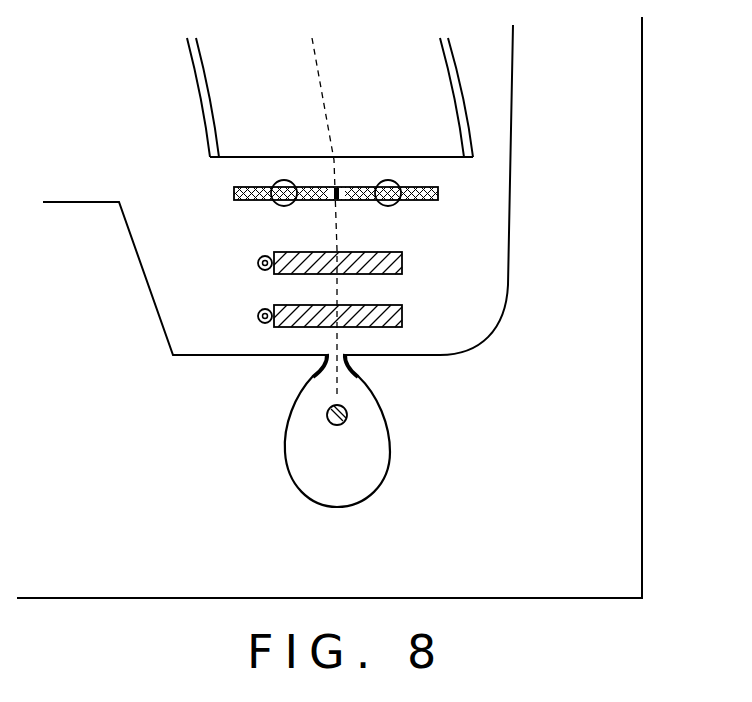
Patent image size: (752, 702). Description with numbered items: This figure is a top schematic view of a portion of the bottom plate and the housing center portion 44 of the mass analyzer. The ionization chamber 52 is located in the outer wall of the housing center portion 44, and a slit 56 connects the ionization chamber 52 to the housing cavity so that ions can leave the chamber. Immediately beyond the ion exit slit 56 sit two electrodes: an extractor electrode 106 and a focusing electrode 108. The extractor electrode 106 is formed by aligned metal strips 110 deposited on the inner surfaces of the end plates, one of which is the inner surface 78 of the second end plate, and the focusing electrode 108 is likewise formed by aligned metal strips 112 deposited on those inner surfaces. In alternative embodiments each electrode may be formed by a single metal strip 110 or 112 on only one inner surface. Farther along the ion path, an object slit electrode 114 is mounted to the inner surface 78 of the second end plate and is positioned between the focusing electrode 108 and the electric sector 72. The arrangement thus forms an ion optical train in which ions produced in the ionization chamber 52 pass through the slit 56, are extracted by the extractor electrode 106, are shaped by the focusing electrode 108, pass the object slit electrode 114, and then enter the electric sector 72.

The housing center portion 44 is at (610, 357).
The inner surface of second end plate 78 is at (489, 77).
The electric sector 72 is at (178, 107).
The object slit electrode 114 is at (438, 192).
The focusing electrode 108 is at (402, 258).
The metal strips 112 is at (380, 250).
The extractor electrode 106 is at (402, 316).
The metal strips 110 is at (380, 313).
The slit 56 is at (328, 367).
The ionization chamber 52 is at (368, 454).